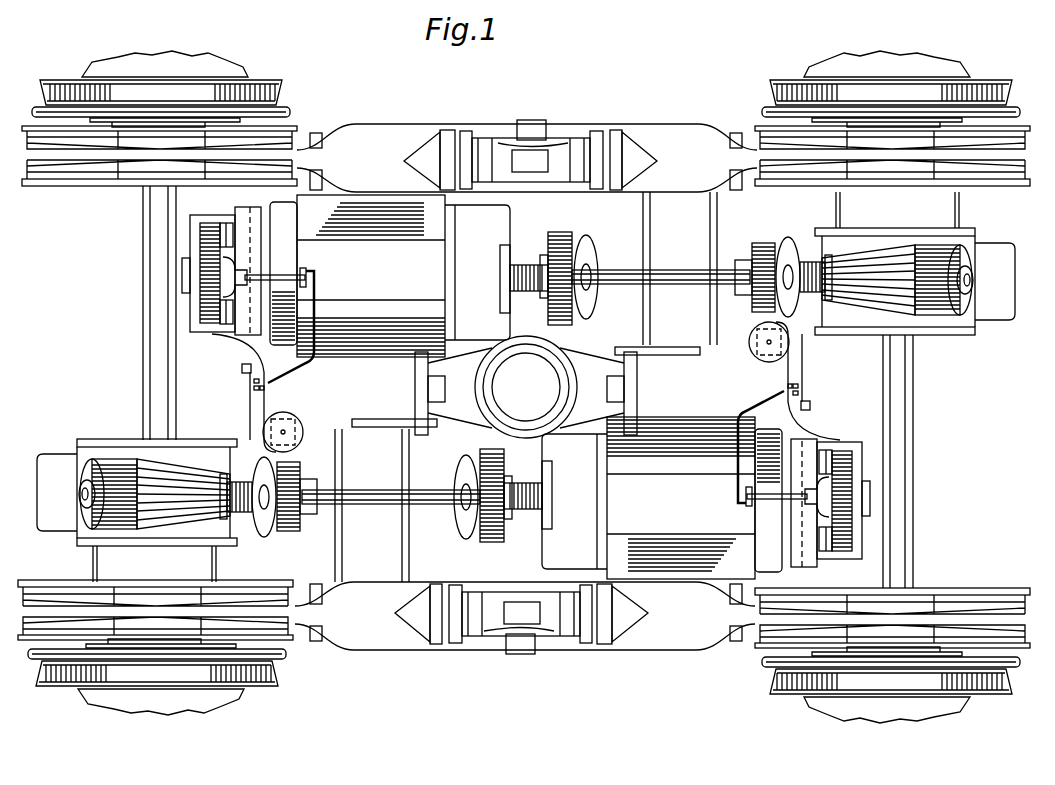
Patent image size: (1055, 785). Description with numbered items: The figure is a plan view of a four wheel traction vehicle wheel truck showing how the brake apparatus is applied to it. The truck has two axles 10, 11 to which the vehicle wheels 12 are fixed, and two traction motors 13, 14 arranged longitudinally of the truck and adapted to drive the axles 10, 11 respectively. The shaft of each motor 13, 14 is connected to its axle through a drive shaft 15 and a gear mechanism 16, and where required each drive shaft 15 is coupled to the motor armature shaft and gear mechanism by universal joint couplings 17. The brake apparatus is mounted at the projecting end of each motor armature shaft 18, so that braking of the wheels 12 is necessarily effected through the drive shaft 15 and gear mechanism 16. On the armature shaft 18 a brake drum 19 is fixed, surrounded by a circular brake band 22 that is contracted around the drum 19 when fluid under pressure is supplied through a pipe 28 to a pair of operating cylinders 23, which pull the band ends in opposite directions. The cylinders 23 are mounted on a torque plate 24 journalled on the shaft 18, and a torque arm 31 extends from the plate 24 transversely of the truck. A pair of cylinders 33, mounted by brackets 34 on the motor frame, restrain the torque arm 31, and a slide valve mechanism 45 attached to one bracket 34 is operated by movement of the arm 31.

The axle 10 is at (913, 383).
The axle 11 is at (143, 250).
The vehicle wheels 12 is at (278, 84).
The traction motor 13 is at (518, 219).
The traction motor 14 is at (542, 562).
The drive shaft 15 is at (632, 270).
The gear mechanism 16 is at (1025, 278).
The universal joint couplings 17 is at (563, 233).
The motor armature shaft 18 is at (300, 274).
The brake drum 19 is at (205, 277).
The brake band 22 is at (210, 323).
The operating cylinders 23 is at (228, 232).
The torque plate 24 is at (261, 212).
The pipe 28 is at (316, 298).
The torque arm 31 is at (250, 414).
The cylinders 33 is at (306, 443).
The brackets 34 is at (272, 405).
The slide valve mechanism 45 is at (244, 393).